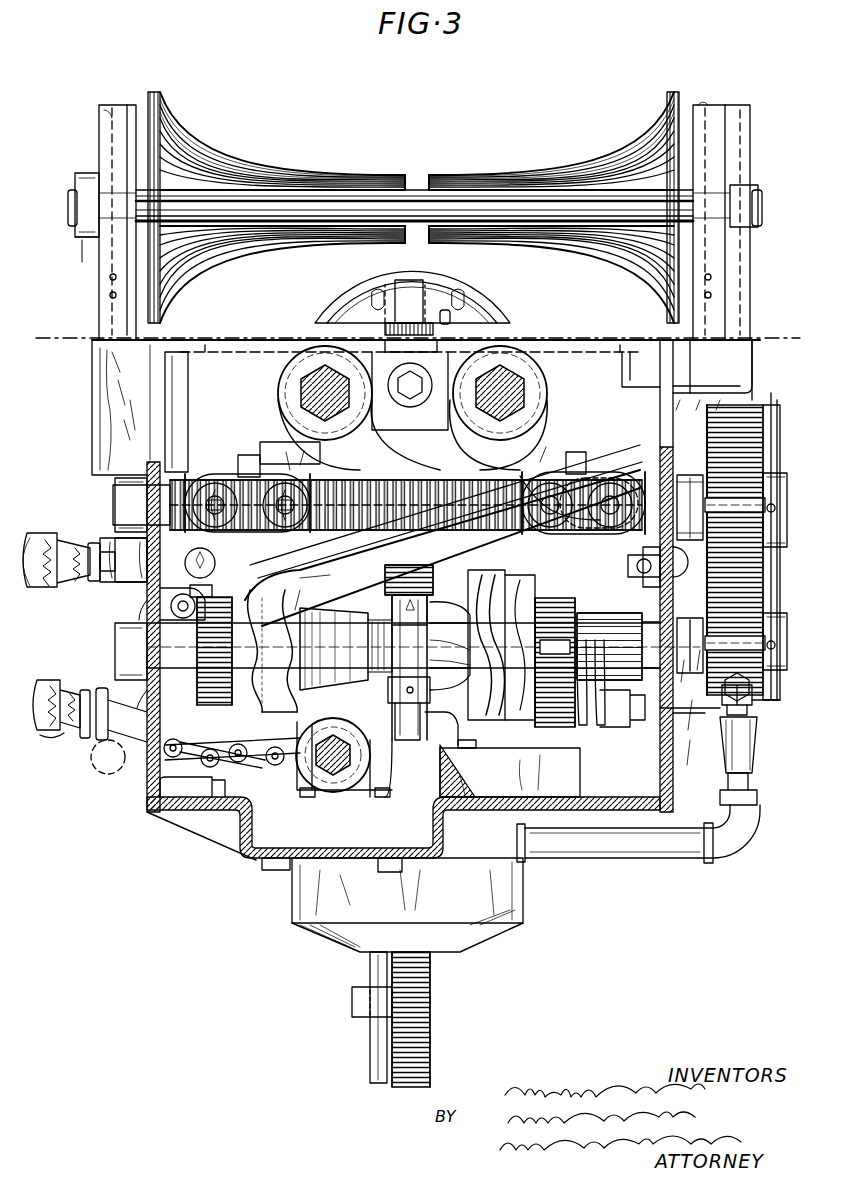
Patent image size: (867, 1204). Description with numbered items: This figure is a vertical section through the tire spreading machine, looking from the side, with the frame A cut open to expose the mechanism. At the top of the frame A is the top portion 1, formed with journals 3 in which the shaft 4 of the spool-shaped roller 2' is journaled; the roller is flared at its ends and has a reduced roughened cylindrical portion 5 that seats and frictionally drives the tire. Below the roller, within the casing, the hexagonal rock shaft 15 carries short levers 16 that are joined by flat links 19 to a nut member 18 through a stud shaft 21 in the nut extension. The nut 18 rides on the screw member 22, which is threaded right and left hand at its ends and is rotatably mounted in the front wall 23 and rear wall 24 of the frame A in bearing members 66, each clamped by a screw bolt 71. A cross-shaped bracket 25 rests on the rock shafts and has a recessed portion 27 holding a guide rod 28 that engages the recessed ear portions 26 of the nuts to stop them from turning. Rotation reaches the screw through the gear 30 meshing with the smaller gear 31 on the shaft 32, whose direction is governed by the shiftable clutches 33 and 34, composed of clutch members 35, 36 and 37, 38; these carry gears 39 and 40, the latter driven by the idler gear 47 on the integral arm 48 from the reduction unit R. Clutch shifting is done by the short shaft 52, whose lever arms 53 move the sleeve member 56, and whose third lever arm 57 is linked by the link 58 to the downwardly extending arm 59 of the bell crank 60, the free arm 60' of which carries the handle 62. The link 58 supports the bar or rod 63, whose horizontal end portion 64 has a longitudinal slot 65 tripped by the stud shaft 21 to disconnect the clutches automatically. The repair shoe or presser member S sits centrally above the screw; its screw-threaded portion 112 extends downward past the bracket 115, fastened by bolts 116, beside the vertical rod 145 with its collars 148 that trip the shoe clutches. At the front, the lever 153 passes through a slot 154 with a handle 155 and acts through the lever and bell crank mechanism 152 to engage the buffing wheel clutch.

The top portion of the frame 1 is at (99, 130).
The spool-shaped roller 2' is at (413, 207).
The journals 3 is at (80, 242).
The roller shafts 4 is at (72, 208).
The reduced roughened cylindrical portions 5 is at (376, 188).
The repair shoe or presser member S is at (480, 300).
The rock shaft 15 is at (310, 385).
The short levers 16 is at (320, 482).
The nut member 18 is at (198, 474).
The links 19 is at (215, 484).
The stud shaft 21 is at (220, 496).
The screw member 22 is at (520, 478).
The front wall of frame 23 is at (146, 600).
The rear wall of frame 24 is at (676, 782).
The cross-shaped bracket 25 is at (485, 352).
The recessed ear portions 26 is at (246, 456).
The recessed portion 27 is at (412, 437).
The guide rod 28 is at (272, 448).
The gear 30 is at (765, 445).
The smaller gear 31 is at (775, 682).
The shaft 32 is at (787, 640).
The shiftable clutch 33 is at (234, 744).
The shiftable clutch 34 is at (500, 600).
The clutch member 35 is at (388, 700).
The clutch member 36 is at (263, 676).
The clutch member 37 is at (455, 608).
The clutch member 38 is at (528, 598).
The gear 39 is at (197, 703).
The gear 40 is at (568, 608).
The idler gear 47 is at (590, 728).
The integral arm 48 is at (598, 727).
The short shaft 52 is at (450, 746).
The lever arms 53 is at (392, 606).
The sleeve member 56 is at (440, 766).
The third lever arm 57 is at (433, 580).
The link 58 is at (252, 590).
The downwardly extending arm 59 is at (178, 606).
The bell crank 60 is at (192, 572).
The free arm of bell crank 60' is at (116, 548).
The handle 62 is at (45, 535).
The bar or rod 63 is at (350, 575).
The horizontal end portion 64 is at (572, 532).
The longitudinal slot 65 is at (604, 470).
The bearing members 66 is at (135, 490).
The screw bolt 71 is at (628, 568).
The screw-threaded portion 112 is at (430, 1050).
The bracket 115 is at (495, 752).
The bolts 116 is at (471, 733).
The vertical rod 145 is at (370, 1056).
The collars 148 is at (352, 1003).
The lever and bell crank mechanism 152 is at (250, 836).
The lever 153 is at (128, 712).
The slot 154 is at (146, 762).
The handle 155 is at (70, 738).
The frame A is at (146, 780).
The reduction unit R is at (338, 755).